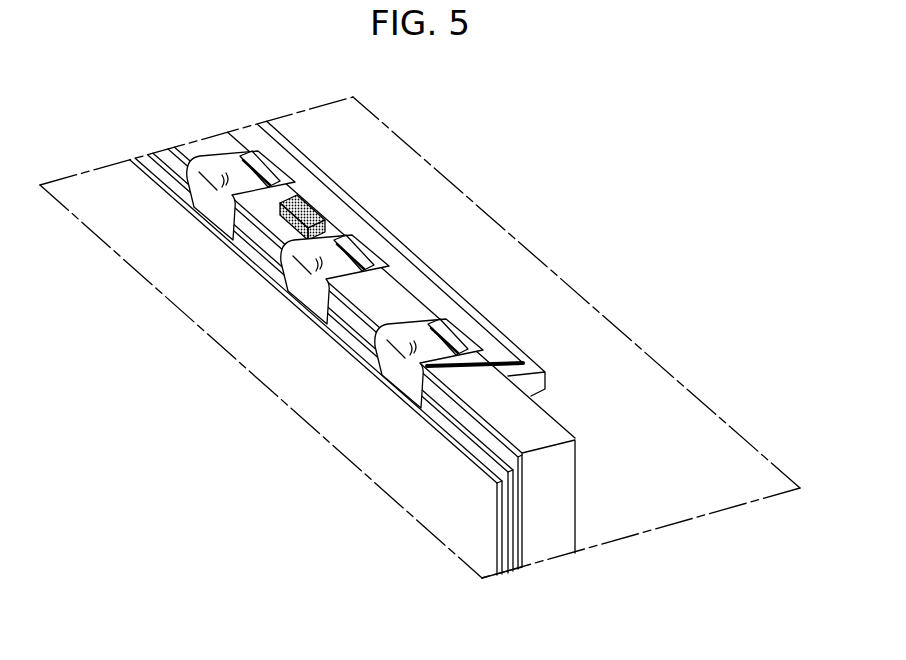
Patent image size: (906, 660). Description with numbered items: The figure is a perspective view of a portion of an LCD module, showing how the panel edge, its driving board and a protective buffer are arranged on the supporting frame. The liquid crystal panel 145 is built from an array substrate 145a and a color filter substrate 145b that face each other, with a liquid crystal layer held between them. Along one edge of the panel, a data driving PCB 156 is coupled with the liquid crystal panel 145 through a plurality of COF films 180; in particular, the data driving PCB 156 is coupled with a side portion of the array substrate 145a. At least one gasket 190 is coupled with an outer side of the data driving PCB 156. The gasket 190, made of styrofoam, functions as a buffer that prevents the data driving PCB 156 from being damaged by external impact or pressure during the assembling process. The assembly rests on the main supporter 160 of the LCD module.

The liquid crystal panel 145 is at (312, 527).
The array substrate 145a is at (478, 445).
The color filter substrate 145b is at (413, 447).
The data driving PCB 156 is at (412, 305).
The main supporter 160 is at (524, 451).
The COF films 180 is at (223, 160).
The gasket 190 is at (305, 200).